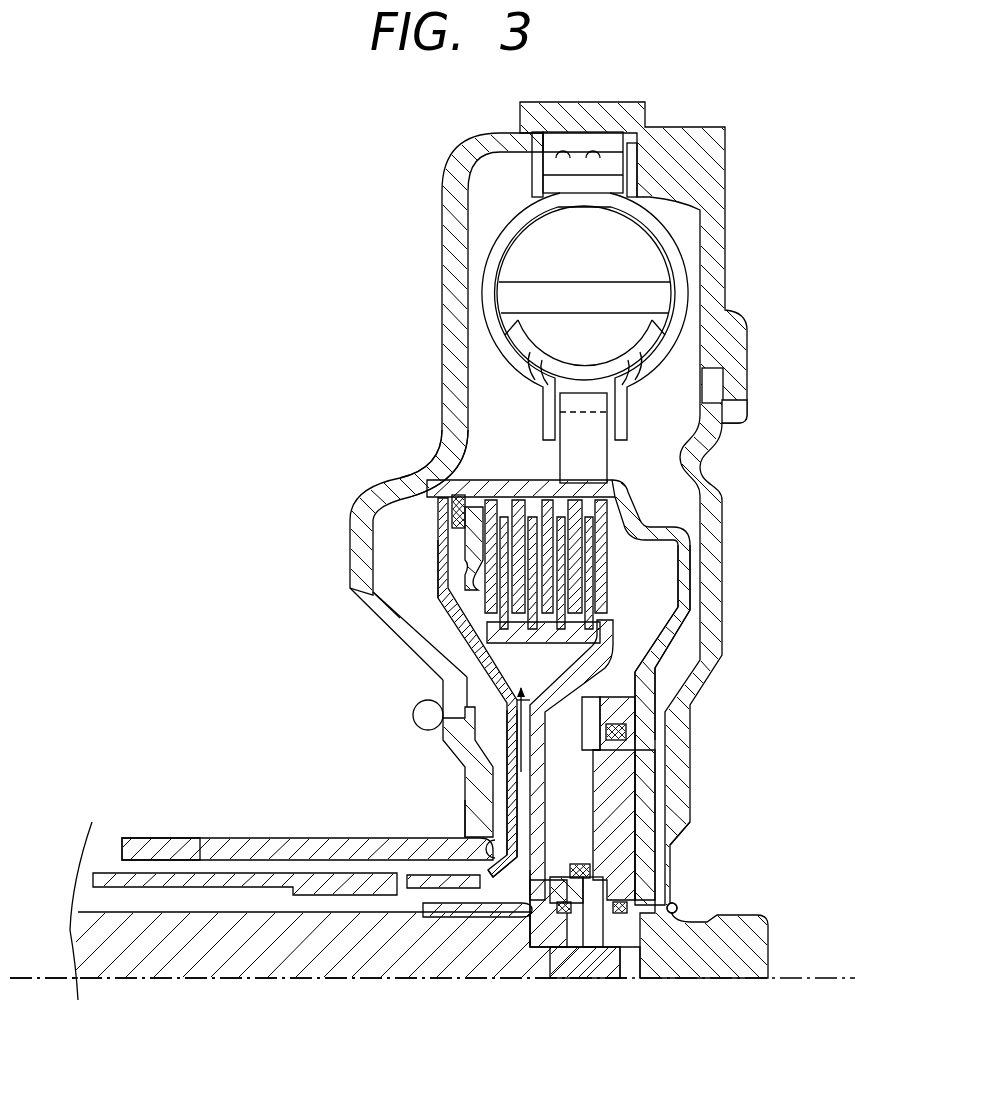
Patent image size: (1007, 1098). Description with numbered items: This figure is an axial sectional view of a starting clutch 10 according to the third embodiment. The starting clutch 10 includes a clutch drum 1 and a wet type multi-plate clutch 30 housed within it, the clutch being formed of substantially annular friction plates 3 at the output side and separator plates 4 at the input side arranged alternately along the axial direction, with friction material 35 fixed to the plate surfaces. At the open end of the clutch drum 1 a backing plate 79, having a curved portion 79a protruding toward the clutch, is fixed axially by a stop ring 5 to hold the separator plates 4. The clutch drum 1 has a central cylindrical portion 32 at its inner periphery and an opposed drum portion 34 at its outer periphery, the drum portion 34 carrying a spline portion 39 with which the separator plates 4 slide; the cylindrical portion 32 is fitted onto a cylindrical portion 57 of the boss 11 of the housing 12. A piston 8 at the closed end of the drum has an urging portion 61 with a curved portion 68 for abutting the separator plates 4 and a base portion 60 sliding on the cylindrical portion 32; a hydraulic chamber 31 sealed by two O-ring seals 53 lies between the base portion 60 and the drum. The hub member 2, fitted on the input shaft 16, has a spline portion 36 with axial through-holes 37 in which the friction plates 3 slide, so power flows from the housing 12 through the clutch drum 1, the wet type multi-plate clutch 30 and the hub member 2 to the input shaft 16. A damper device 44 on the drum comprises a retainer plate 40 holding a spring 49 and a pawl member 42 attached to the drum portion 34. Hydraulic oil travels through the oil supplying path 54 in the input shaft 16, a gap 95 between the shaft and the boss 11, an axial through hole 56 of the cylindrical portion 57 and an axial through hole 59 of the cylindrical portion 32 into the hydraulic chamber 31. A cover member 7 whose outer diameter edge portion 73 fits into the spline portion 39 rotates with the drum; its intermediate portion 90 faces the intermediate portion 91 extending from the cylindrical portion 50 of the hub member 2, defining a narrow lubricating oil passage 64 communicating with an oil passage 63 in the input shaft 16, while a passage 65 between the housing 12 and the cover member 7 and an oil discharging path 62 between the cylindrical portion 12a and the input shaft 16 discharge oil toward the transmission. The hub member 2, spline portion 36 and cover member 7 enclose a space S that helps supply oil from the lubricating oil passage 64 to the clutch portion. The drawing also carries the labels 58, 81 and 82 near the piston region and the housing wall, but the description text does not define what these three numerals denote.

The clutch drum 1 is at (693, 566).
The hub member 2 is at (540, 776).
The friction plates 3 is at (580, 641).
The separator plates 4 is at (635, 516).
The stop ring 5 is at (480, 516).
The cover member 7 is at (500, 732).
The piston 8 is at (658, 700).
The starting clutch 10 is at (748, 133).
The boss 11 is at (758, 950).
The housing 12 is at (455, 180).
The cylindrical portion 12a is at (230, 850).
The input shaft 16 is at (218, 950).
The wet type multi-plate clutch 30 is at (460, 472).
The hydraulic chamber 31 is at (674, 845).
The cylindrical portion 32 is at (525, 905).
The drum portion 34 is at (509, 480).
The friction material 35 is at (604, 604).
The spline portion 36 is at (455, 630).
The axial through-holes 37 is at (470, 668).
The spline portion 39 is at (430, 500).
The retainer plate 40 is at (700, 294).
The pawl member 42 is at (650, 461).
The damper device 44 is at (686, 241).
The spring 49 is at (645, 341).
The cylindrical portion 50 is at (440, 912).
The O-ring seals 53 is at (628, 735).
The oil supplying path 54 is at (290, 980).
The axial through hole 56 is at (600, 960).
The cylindrical portion 57 is at (678, 906).
The cylindrical member 58 is at (660, 802).
The axial through hole 59 is at (593, 937).
The base portion 60 is at (650, 789).
The urging portion 61 is at (662, 665).
The oil discharging path 62 is at (165, 855).
The oil passage 63 is at (140, 885).
The lubricating oil passage 64 is at (480, 802).
The passage 65 is at (416, 718).
The curved portion 68 is at (700, 580).
The outer diameter edge portion 73 is at (455, 498).
The backing plate 79 is at (462, 522).
The curved portion 79a is at (438, 550).
The cover inner portion 81 is at (450, 665).
The cover bend 82 is at (438, 630).
The intermediate portion 90 is at (485, 822).
The intermediate portion 91 is at (497, 915).
The gap 95 is at (645, 960).
The space S is at (467, 728).